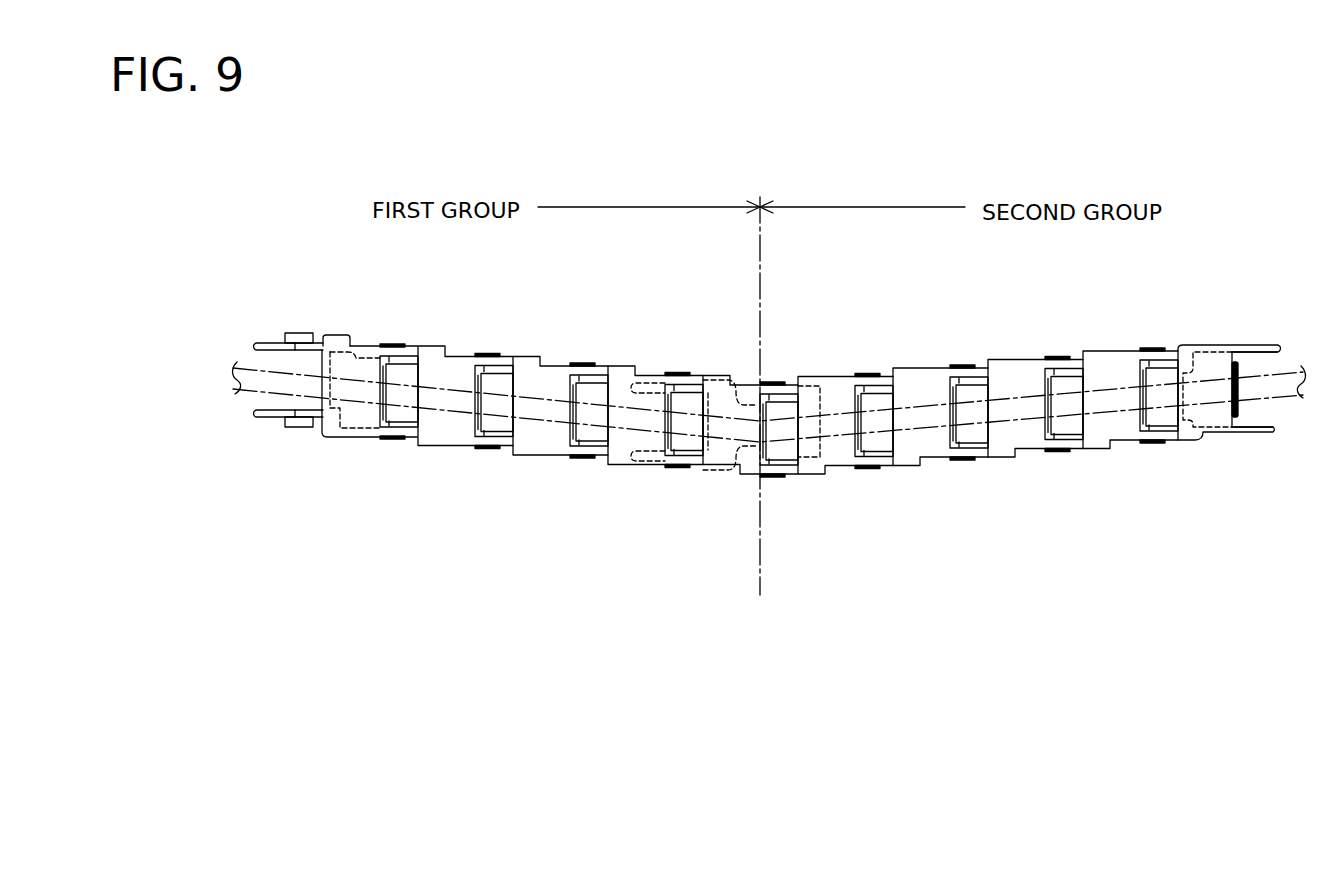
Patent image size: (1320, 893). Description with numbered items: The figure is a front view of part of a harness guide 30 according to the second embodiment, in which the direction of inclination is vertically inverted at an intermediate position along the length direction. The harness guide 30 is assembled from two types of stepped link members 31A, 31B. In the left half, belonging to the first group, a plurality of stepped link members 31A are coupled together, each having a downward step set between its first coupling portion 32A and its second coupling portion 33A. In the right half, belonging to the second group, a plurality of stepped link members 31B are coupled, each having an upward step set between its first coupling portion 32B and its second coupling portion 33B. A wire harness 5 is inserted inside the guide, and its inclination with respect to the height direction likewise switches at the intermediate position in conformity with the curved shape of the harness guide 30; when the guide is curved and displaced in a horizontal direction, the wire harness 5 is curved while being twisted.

The wire harness 5 is at (626, 428).
The harness guide 30 is at (979, 332).
The stepped link member 31A is at (372, 285).
The first coupling portion 32A is at (367, 347).
The second coupling portion 33A is at (267, 345).
The stepped link member 31B is at (1248, 298).
The first coupling portion 32B is at (1218, 347).
The second coupling portion 33B is at (1170, 366).